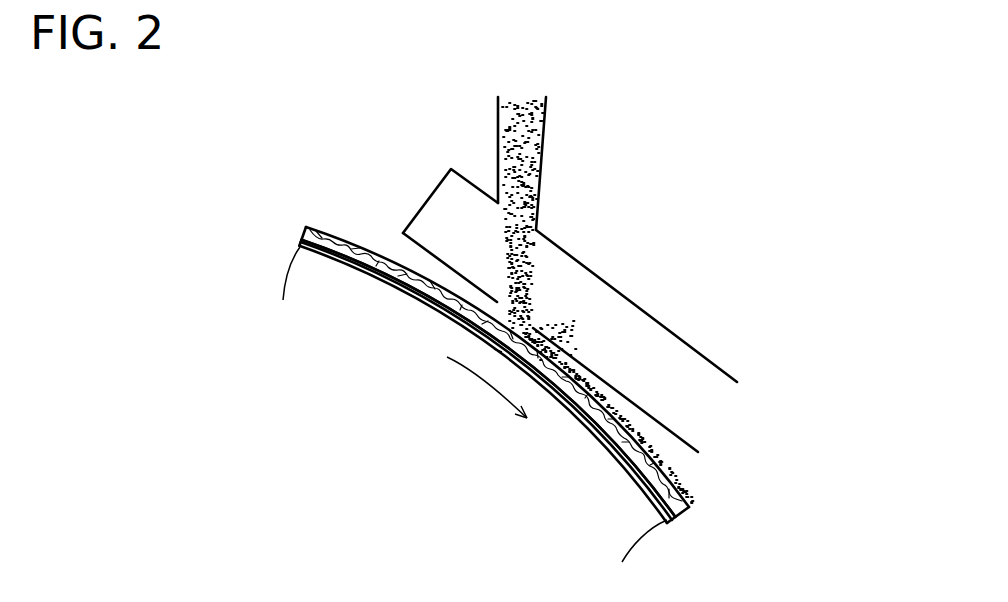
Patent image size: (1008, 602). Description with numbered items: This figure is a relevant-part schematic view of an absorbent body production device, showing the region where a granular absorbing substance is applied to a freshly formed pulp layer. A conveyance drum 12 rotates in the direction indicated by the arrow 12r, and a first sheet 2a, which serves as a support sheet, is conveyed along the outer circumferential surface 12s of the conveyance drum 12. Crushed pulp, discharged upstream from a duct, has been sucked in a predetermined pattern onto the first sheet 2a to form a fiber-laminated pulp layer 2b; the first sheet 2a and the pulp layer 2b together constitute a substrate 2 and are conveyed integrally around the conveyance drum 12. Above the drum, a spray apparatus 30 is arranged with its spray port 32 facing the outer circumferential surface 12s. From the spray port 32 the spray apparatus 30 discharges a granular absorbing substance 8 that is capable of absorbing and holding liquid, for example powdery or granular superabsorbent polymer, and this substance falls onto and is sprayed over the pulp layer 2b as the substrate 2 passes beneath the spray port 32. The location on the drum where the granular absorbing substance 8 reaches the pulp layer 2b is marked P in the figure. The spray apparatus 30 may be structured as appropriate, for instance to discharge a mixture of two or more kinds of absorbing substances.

The substrate 2 is at (423, 348).
The first sheet 2a is at (300, 245).
The pulp layer 2b is at (306, 227).
The granular absorbing substance 8 is at (527, 282).
The conveyance drum 12 is at (428, 381).
The outer circumferential surface 12s is at (380, 272).
The conveyance direction arrow 12r is at (487, 407).
The spray apparatus 30 is at (629, 185).
The spray port 32 is at (508, 307).
The supply position P is at (498, 350).